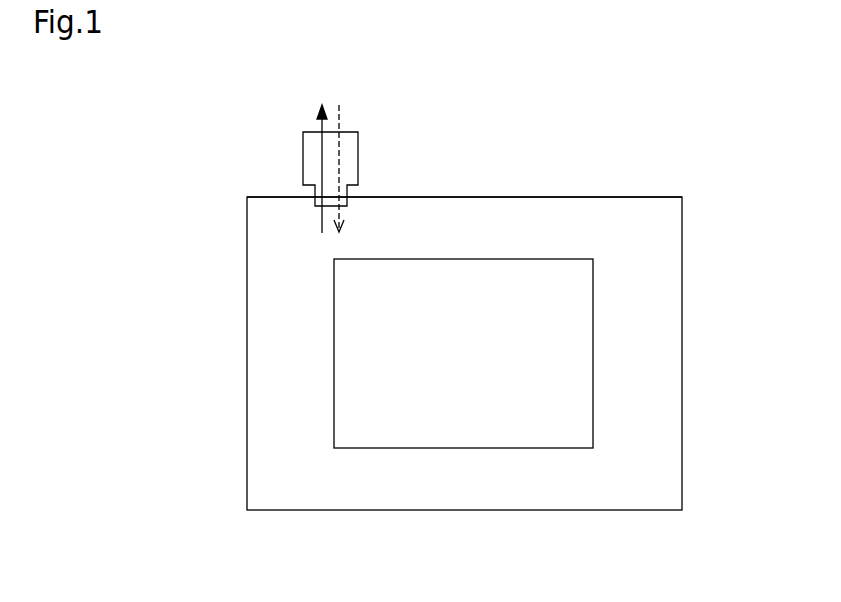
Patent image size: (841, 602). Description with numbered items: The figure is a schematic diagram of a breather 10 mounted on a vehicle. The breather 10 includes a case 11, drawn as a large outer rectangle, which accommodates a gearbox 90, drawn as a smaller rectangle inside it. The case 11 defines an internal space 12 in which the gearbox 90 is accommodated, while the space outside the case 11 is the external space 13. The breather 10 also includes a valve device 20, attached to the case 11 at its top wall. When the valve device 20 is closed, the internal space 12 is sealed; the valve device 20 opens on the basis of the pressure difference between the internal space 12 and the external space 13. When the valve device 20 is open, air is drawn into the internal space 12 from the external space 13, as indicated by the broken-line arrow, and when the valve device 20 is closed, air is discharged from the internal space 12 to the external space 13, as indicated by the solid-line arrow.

The breather 10 is at (657, 168).
The case 11 is at (487, 196).
The internal space 12 is at (655, 328).
The external space 13 is at (744, 328).
The valve device 20 is at (368, 157).
The gearbox 90 is at (508, 258).